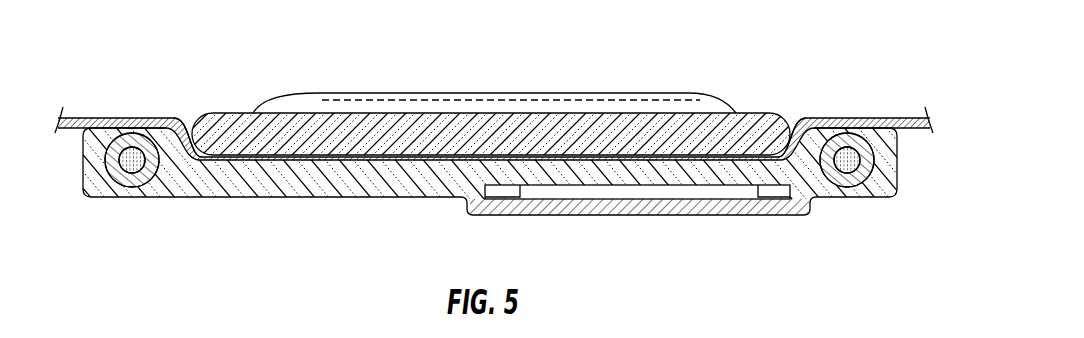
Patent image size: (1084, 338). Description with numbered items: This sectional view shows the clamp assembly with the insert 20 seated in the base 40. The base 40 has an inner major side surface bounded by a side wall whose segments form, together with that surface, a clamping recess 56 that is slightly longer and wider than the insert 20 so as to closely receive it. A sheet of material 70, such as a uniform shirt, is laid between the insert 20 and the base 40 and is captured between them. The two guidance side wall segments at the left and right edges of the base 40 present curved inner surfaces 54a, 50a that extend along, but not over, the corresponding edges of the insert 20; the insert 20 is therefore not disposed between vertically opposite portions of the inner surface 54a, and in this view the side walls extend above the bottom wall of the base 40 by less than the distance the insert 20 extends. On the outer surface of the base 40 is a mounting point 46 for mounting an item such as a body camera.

The insert 20 is at (389, 113).
The base 40 is at (211, 199).
The mounting point 46 is at (539, 217).
The curved inner surface 50a is at (757, 115).
The curved inner surface 54a is at (219, 137).
The clamping recess 56 is at (507, 130).
The sheet of material 70 is at (873, 119).